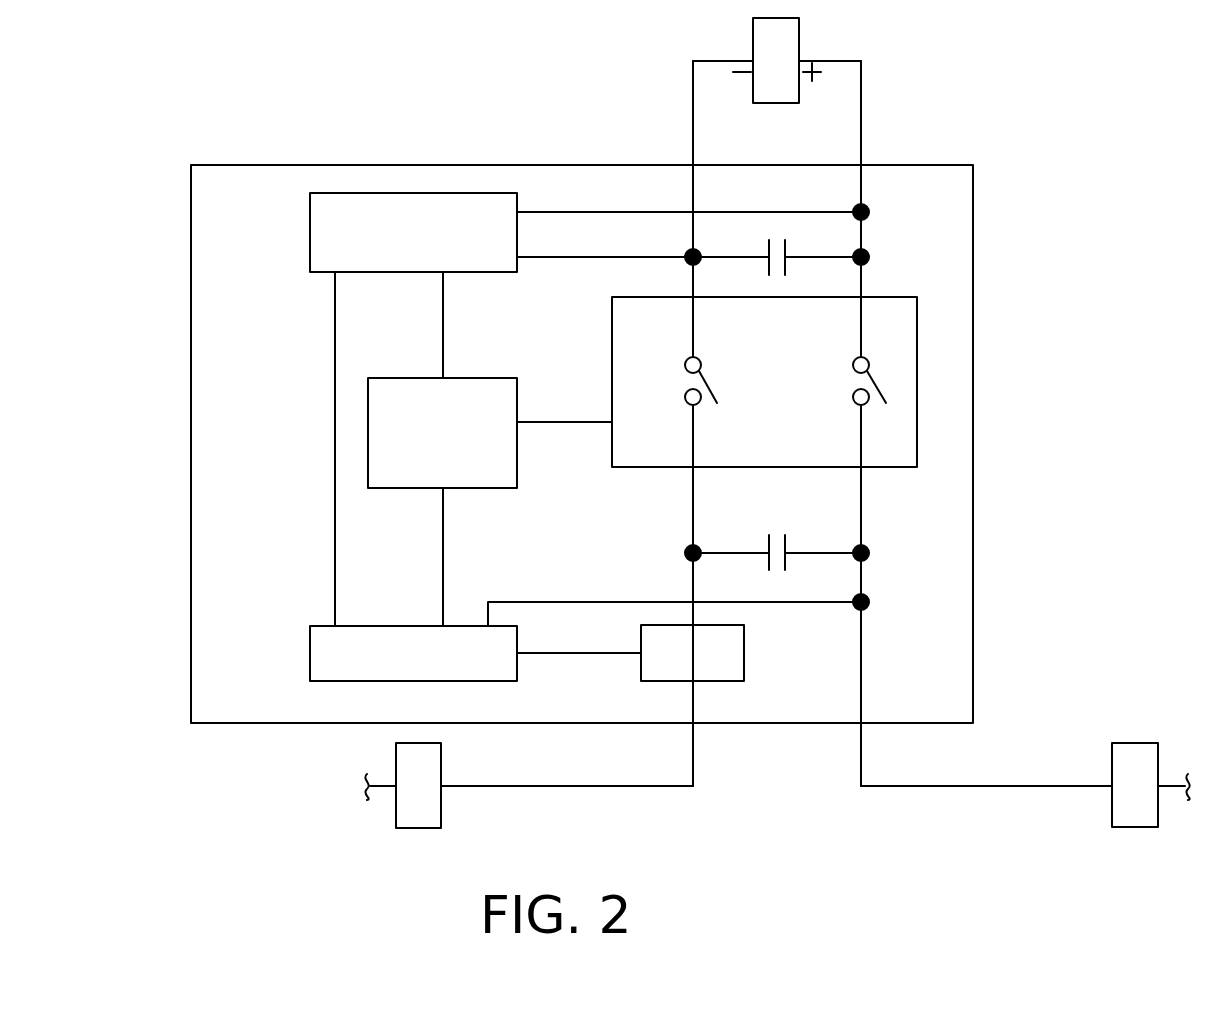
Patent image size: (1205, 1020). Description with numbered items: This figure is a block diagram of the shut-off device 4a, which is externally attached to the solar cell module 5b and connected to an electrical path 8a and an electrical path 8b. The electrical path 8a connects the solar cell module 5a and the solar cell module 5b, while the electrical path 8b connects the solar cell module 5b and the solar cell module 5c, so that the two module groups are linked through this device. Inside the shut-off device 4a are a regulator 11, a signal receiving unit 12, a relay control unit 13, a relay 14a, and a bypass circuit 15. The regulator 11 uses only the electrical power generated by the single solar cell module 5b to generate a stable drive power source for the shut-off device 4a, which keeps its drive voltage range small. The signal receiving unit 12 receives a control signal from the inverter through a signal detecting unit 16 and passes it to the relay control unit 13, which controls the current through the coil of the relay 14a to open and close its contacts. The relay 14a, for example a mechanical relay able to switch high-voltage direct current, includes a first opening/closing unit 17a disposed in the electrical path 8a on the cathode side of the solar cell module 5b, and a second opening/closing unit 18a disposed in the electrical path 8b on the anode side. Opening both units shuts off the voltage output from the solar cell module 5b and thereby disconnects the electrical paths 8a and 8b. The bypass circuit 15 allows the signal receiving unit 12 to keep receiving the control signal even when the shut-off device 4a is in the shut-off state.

The shut-off device 4a is at (951, 154).
The regulator 11 is at (310, 233).
The signal receiving unit 12 is at (310, 656).
The relay control unit 13 is at (368, 439).
The relay 14a is at (917, 433).
The bypass circuit 15 is at (807, 556).
The signal detecting unit 16 is at (730, 681).
The first opening/closing unit 17a is at (712, 382).
The second opening/closing unit 18a is at (880, 382).
The solar cell module 5a is at (396, 812).
The solar cell module 5b is at (753, 33).
The solar cell module 5c is at (1137, 743).
The electrical path 8a is at (548, 786).
The electrical path 8b is at (1015, 785).